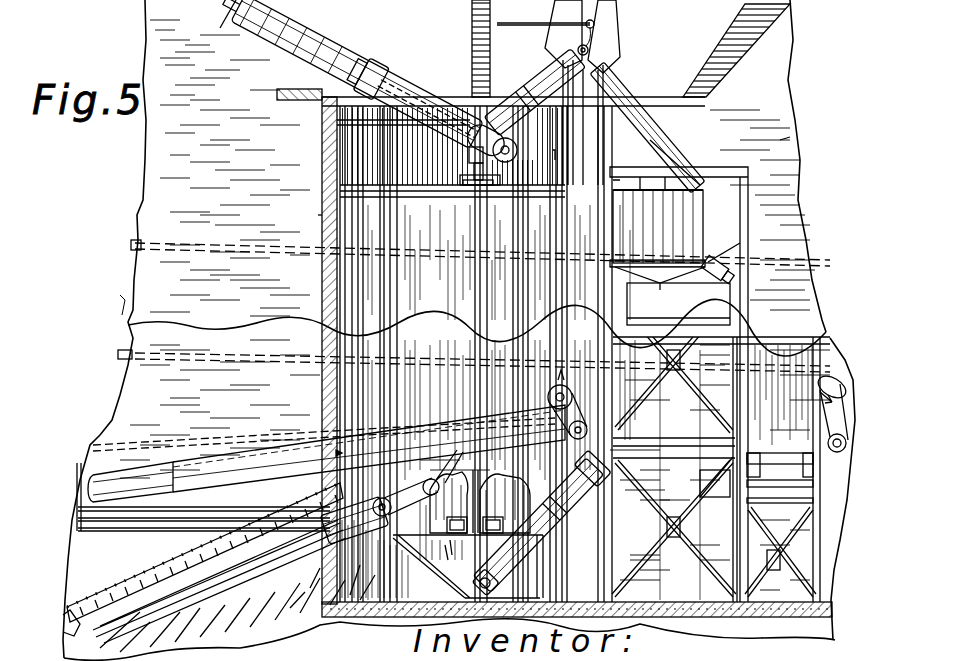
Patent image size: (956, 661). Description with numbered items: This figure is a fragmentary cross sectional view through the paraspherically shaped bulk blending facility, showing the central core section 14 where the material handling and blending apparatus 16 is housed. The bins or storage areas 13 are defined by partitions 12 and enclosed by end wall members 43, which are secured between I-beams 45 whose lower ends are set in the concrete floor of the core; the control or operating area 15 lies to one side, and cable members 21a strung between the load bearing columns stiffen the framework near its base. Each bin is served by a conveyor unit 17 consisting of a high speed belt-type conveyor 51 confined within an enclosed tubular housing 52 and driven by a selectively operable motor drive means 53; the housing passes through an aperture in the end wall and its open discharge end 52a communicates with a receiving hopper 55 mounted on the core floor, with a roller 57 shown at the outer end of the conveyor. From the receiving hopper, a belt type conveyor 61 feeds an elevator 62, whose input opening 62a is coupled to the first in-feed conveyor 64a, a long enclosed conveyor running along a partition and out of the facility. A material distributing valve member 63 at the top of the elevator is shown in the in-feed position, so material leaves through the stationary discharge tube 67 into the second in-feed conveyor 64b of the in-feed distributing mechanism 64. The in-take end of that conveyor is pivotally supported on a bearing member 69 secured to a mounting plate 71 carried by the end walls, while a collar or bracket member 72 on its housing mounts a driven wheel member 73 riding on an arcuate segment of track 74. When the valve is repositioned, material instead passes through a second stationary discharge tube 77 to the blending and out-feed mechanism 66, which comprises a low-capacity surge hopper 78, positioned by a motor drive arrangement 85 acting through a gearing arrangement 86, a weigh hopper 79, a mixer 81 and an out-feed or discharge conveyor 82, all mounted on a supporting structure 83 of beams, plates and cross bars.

The bin defining walls or partitions 12 is at (155, 48).
The bins or storage areas 13 is at (190, 181).
The central core section 14 is at (440, 296).
The control or operating area 15 is at (790, 137).
The material handling and blending apparatus 16 is at (729, 236).
The conveyor units 17 is at (465, 548).
The cable members 21a is at (133, 245).
The end wall members 43 is at (322, 215).
The I-beam 45 is at (660, 138).
The belt-type conveyor 51 is at (212, 596).
The tubular housing 52 is at (175, 548).
The open discharge end 52a is at (492, 535).
The motor drive means 53 is at (322, 440).
The receiving hopper 55 is at (483, 577).
The roller 57 is at (65, 622).
The belt type conveyor 61 is at (548, 543).
The elevator 62 is at (592, 281).
The input opening 62a is at (585, 402).
The material distributing valve member 63 is at (600, 42).
The in-feed distributing mechanism 64 is at (380, 62).
The first in-feed conveyor 64a is at (238, 460).
The second in-feed conveyor 64b is at (468, 110).
The blending and out-feed mechanism 66 is at (730, 168).
The discharge tube 67 is at (523, 82).
The bearing member 69 is at (469, 156).
The mounting plate 71 is at (440, 195).
The collar or bracket member 72 is at (398, 75).
The driven wheel member 73 is at (325, 108).
The arcuate segment of track 74 is at (335, 130).
The discharge tube 77 is at (640, 97).
The surge hopper 78 is at (690, 207).
The weigh hopper 79 is at (680, 308).
The mixer 81 is at (794, 411).
The out-feed or discharge conveyor 82 is at (855, 460).
The supporting structure 83 is at (615, 560).
The motor drive arrangement 85 is at (732, 276).
The gearing arrangement 86 is at (703, 262).